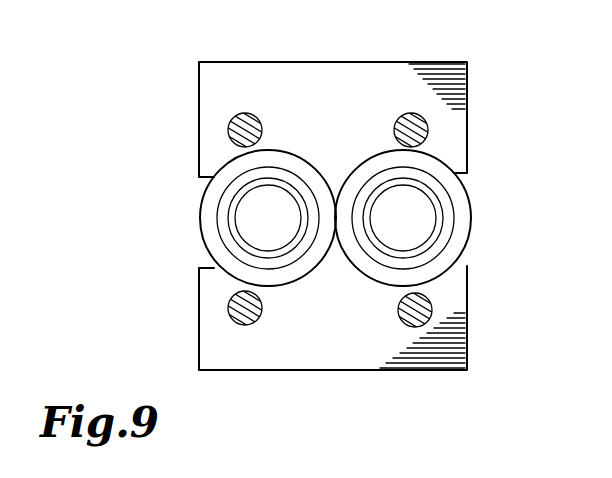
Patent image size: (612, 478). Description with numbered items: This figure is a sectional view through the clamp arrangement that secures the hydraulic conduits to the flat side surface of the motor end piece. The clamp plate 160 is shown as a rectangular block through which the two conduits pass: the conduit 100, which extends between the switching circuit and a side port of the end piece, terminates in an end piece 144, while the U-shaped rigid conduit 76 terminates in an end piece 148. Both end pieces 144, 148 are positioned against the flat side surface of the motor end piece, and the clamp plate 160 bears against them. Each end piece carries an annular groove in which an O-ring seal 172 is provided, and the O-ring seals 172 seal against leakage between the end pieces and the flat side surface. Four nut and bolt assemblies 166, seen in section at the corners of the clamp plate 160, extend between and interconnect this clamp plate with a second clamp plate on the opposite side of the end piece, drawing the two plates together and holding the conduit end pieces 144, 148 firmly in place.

The clamp plate 160 is at (323, 358).
The nut and bolt assemblies 166 is at (244, 113).
The end piece 144 is at (208, 230).
The O-ring seal 172 is at (225, 248).
The conduit 100 is at (240, 207).
The end piece 148 is at (457, 250).
The conduit 76 is at (436, 219).